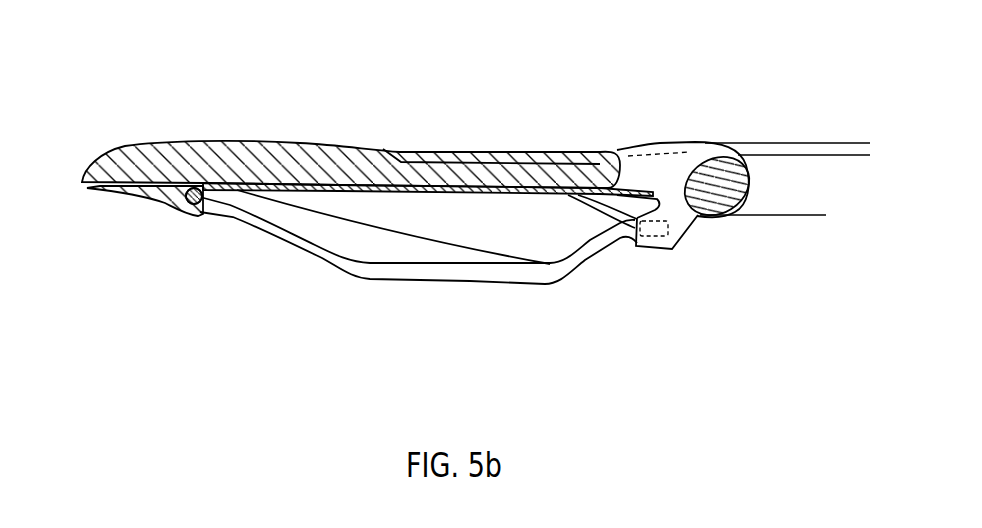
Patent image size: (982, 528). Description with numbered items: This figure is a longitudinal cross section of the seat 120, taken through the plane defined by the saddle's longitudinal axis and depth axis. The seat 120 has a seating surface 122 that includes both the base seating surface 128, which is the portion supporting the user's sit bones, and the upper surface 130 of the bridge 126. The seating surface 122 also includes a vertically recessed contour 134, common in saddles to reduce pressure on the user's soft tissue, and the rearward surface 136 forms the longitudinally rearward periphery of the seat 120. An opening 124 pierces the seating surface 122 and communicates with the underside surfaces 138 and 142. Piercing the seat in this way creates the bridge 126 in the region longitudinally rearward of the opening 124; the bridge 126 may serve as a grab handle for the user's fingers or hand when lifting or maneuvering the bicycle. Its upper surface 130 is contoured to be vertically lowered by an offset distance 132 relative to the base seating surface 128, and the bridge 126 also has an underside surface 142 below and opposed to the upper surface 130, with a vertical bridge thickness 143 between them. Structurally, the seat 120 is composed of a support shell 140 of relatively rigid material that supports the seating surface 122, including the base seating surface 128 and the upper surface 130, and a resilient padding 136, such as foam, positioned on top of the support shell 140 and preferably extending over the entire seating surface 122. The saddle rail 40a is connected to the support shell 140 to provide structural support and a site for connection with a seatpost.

The seat 120 is at (183, 354).
The seating surface 122 is at (173, 142).
The opening 124 is at (653, 158).
The bridge 126 is at (705, 153).
The base seating surface 128 is at (527, 158).
The upper surface 130 is at (726, 156).
The offset distance 132 is at (858, 155).
The vertically recessed contour 134 is at (460, 158).
The resilient padding 136 is at (228, 163).
The underside surface 138 is at (540, 193).
The support shell 140 is at (348, 193).
The underside surface 142 is at (698, 214).
The vertical bridge thickness 143 is at (813, 155).
The saddle rail 40a is at (391, 275).